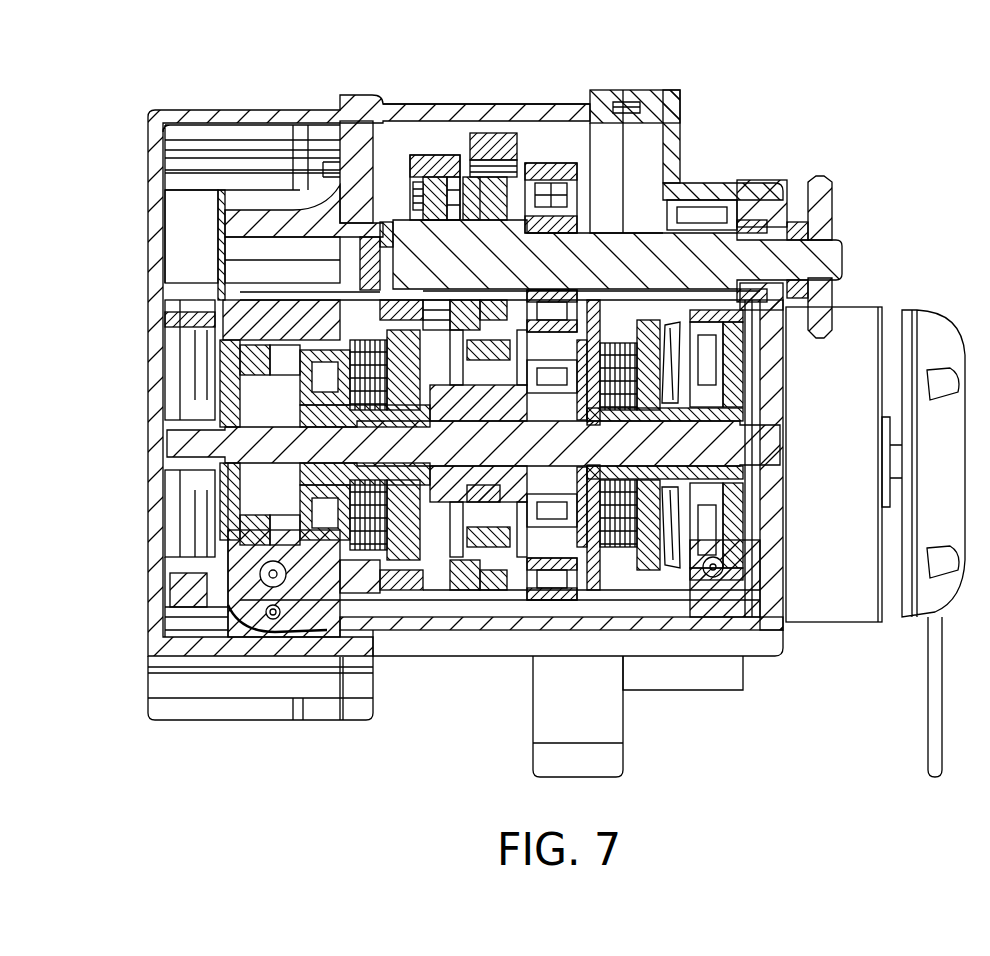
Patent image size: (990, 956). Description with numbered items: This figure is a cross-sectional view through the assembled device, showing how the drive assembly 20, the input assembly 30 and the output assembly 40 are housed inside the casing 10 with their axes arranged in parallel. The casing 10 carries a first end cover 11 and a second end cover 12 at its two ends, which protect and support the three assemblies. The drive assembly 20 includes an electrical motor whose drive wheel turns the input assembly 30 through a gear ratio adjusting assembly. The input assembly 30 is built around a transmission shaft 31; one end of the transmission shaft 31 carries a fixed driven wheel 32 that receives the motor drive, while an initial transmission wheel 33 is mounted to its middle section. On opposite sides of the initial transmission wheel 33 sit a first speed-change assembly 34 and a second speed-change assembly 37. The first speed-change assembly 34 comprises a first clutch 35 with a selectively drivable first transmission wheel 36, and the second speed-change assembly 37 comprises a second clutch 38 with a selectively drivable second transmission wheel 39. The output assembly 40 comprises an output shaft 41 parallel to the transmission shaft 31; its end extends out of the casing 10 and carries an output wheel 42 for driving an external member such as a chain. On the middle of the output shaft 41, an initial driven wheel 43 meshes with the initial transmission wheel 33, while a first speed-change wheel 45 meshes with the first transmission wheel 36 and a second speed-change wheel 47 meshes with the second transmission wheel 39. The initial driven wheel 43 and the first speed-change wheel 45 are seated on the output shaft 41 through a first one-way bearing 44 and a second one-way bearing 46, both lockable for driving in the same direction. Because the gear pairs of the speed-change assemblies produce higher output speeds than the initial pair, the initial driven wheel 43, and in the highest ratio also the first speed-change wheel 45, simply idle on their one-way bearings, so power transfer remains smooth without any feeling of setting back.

The casing 10 is at (530, 125).
The first end cover 11 is at (245, 112).
The second end cover 12 is at (752, 195).
The drive assembly 20 is at (840, 626).
The input assembly 30 is at (463, 560).
The transmission shaft 31 is at (245, 493).
The driven wheel 32 is at (177, 590).
The initial transmission wheel 33 is at (500, 530).
The first speed-change assembly 34 is at (385, 574).
The first clutch 35 is at (360, 575).
The first transmission wheel 36 is at (440, 548).
The second speed-change assembly 37 is at (620, 575).
The second clutch 38 is at (620, 548).
The second transmission wheel 39 is at (557, 530).
The output assembly 40 is at (596, 207).
The output shaft 41 is at (682, 248).
The output wheel 42 is at (832, 205).
The initial driven wheel 43 is at (488, 188).
The first one-way bearing 44 is at (492, 143).
The first speed-change wheel 45 is at (462, 158).
The second one-way bearing 46 is at (437, 162).
The second speed-change wheel 47 is at (553, 165).